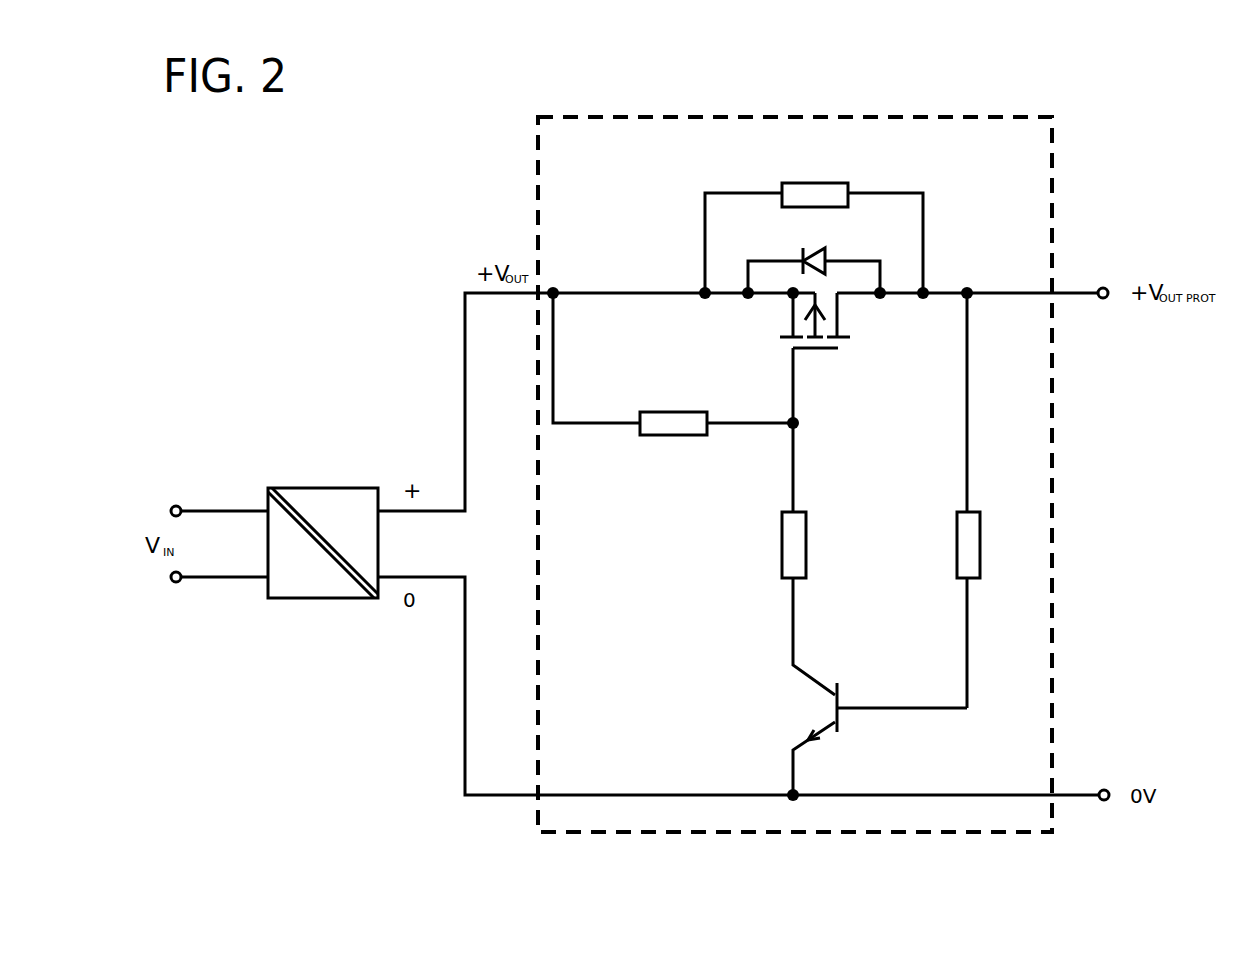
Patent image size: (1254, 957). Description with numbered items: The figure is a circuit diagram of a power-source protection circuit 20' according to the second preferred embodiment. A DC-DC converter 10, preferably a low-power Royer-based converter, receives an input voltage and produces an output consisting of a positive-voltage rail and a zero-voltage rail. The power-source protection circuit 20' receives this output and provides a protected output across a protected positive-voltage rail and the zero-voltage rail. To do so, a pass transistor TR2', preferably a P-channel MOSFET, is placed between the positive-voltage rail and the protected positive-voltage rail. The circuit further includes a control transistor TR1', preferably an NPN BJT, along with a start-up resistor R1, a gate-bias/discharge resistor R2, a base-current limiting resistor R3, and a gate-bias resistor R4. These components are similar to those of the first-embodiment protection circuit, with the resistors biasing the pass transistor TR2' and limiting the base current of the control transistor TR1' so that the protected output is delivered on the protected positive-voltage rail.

The DC-DC converter 10 is at (323, 566).
The power-source protection circuit 20' is at (795, 501).
The start-up resistor R1 is at (814, 217).
The gate-bias/discharge resistor R2 is at (673, 442).
The base-current limiting resistor R3 is at (945, 610).
The gate-bias resistor R4 is at (771, 545).
The control transistor TR1' is at (859, 686).
The pass transistor TR2' is at (799, 298).